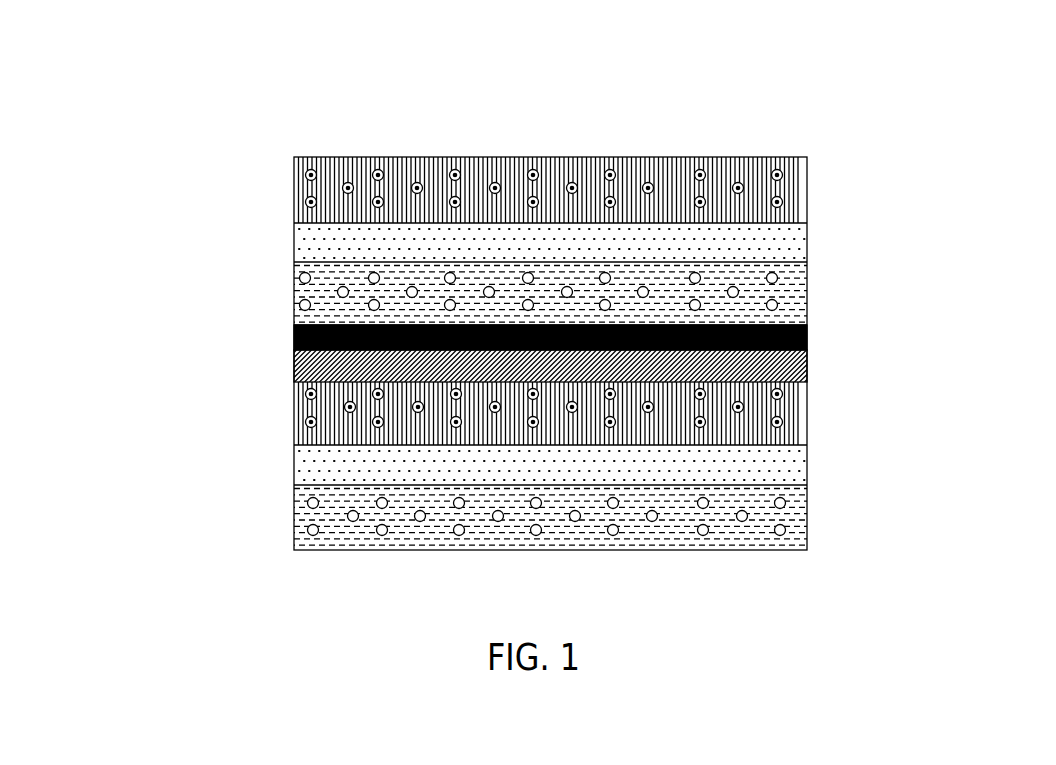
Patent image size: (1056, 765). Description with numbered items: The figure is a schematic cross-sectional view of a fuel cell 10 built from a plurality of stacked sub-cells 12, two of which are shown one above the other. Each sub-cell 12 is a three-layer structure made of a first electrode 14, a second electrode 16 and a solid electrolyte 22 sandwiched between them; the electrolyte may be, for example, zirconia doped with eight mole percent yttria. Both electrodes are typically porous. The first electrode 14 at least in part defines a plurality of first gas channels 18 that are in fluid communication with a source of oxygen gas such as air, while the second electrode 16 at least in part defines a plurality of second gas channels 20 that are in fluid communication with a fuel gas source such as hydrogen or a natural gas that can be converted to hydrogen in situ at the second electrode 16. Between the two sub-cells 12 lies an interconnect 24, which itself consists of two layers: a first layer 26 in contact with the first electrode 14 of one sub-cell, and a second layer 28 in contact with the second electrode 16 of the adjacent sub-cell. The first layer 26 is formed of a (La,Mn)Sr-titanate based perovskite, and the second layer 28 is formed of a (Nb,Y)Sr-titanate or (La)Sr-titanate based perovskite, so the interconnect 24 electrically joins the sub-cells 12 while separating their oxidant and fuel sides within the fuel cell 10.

The fuel cell 10 is at (230, 147).
The sub-cell 12 is at (559, 307).
The first electrode 14 is at (588, 268).
The second electrode 16 is at (596, 307).
The first gas channels 18 is at (459, 173).
The second gas channels 20 is at (608, 274).
The solid electrolyte 22 is at (783, 239).
The interconnect 24 is at (614, 343).
The first layer 26 is at (783, 361).
The second layer 28 is at (782, 333).